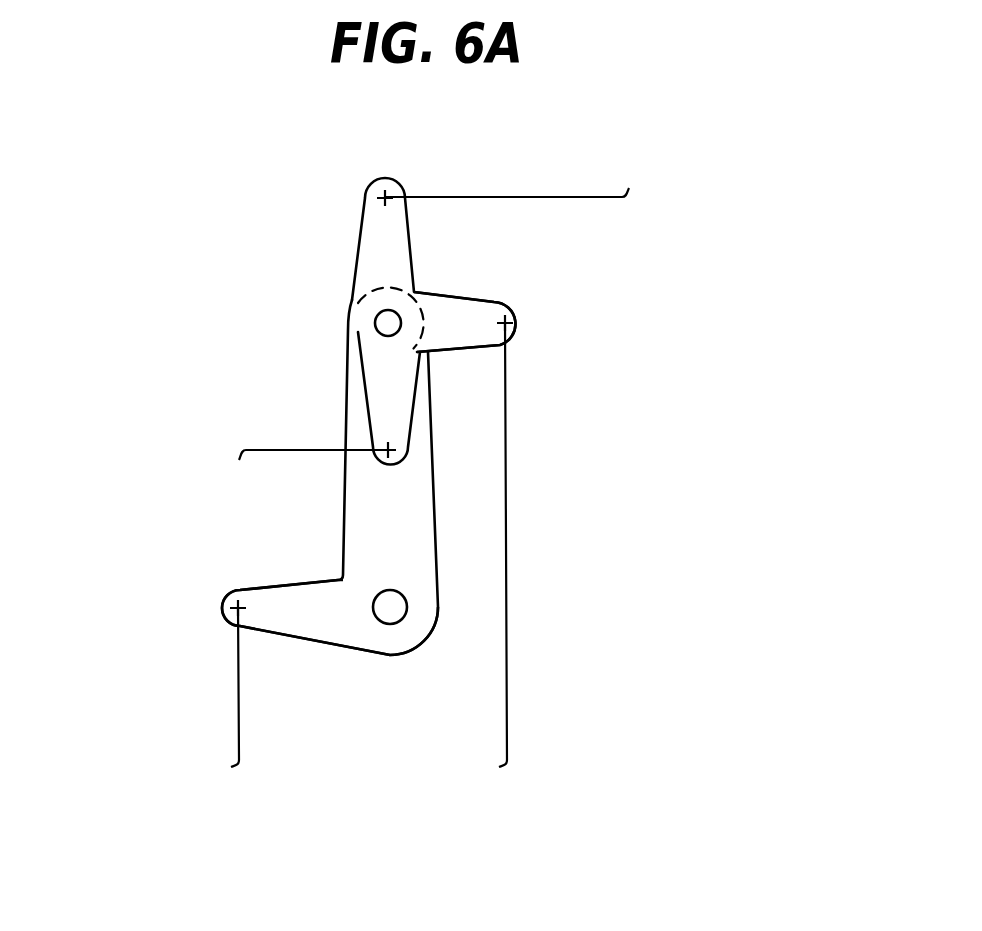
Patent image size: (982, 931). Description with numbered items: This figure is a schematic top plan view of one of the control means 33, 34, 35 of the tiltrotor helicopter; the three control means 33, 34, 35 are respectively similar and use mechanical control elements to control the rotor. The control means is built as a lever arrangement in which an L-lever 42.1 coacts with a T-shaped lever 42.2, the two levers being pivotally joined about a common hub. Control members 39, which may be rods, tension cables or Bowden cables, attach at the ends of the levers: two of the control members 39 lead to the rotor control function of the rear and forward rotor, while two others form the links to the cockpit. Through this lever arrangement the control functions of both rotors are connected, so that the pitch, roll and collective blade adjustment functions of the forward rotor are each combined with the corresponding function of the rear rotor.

The control means 33 is at (258, 300).
The control means 34 is at (368, 449).
The control means 35 is at (368, 449).
The control member 39 is at (513, 193).
The L-lever 42.1 is at (345, 633).
The T-shaped lever 42.2 is at (465, 313).